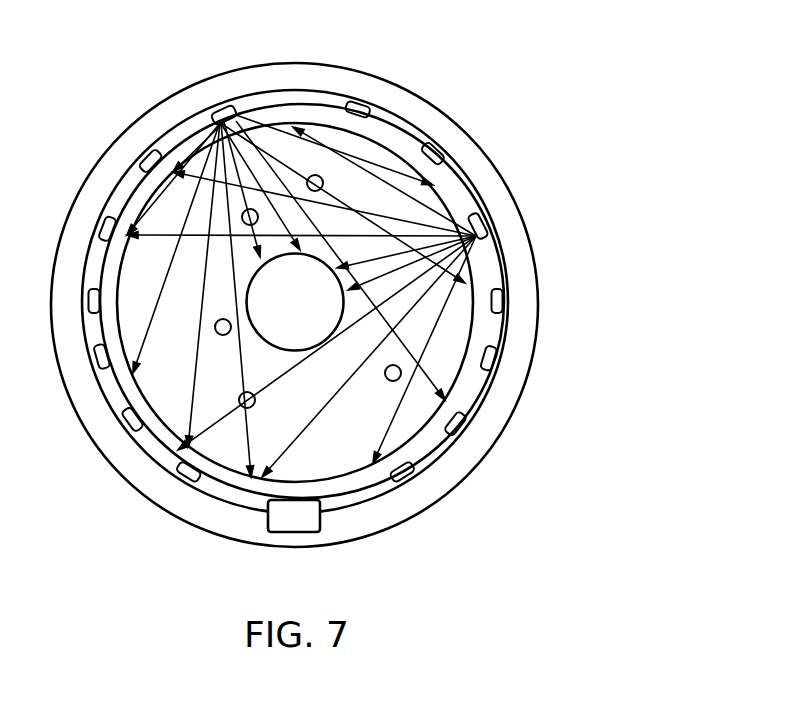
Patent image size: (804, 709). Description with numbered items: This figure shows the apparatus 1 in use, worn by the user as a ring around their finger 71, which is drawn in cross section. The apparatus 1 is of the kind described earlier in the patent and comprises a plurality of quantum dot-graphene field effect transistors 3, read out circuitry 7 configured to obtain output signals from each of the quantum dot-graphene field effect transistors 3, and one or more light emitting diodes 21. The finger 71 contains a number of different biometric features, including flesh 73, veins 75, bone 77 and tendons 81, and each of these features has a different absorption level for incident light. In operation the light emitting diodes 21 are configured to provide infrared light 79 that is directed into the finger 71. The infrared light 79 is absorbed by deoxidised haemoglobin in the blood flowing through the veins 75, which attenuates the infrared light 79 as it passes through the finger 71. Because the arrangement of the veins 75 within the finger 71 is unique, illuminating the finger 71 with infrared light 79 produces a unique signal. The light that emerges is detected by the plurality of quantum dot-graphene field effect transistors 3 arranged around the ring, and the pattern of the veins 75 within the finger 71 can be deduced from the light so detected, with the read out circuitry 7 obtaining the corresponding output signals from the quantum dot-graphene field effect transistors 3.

The apparatus 1 is at (495, 447).
The quantum dot-graphene field effect transistors 3 is at (162, 457).
The read out circuitry 7 is at (293, 533).
The light emitting diodes 21 is at (492, 236).
The finger 71 is at (475, 323).
The flesh 73 is at (368, 182).
The veins 75 is at (317, 177).
The bone 77 is at (253, 273).
The infrared light 79 is at (488, 239).
The tendons 81 is at (100, 401).